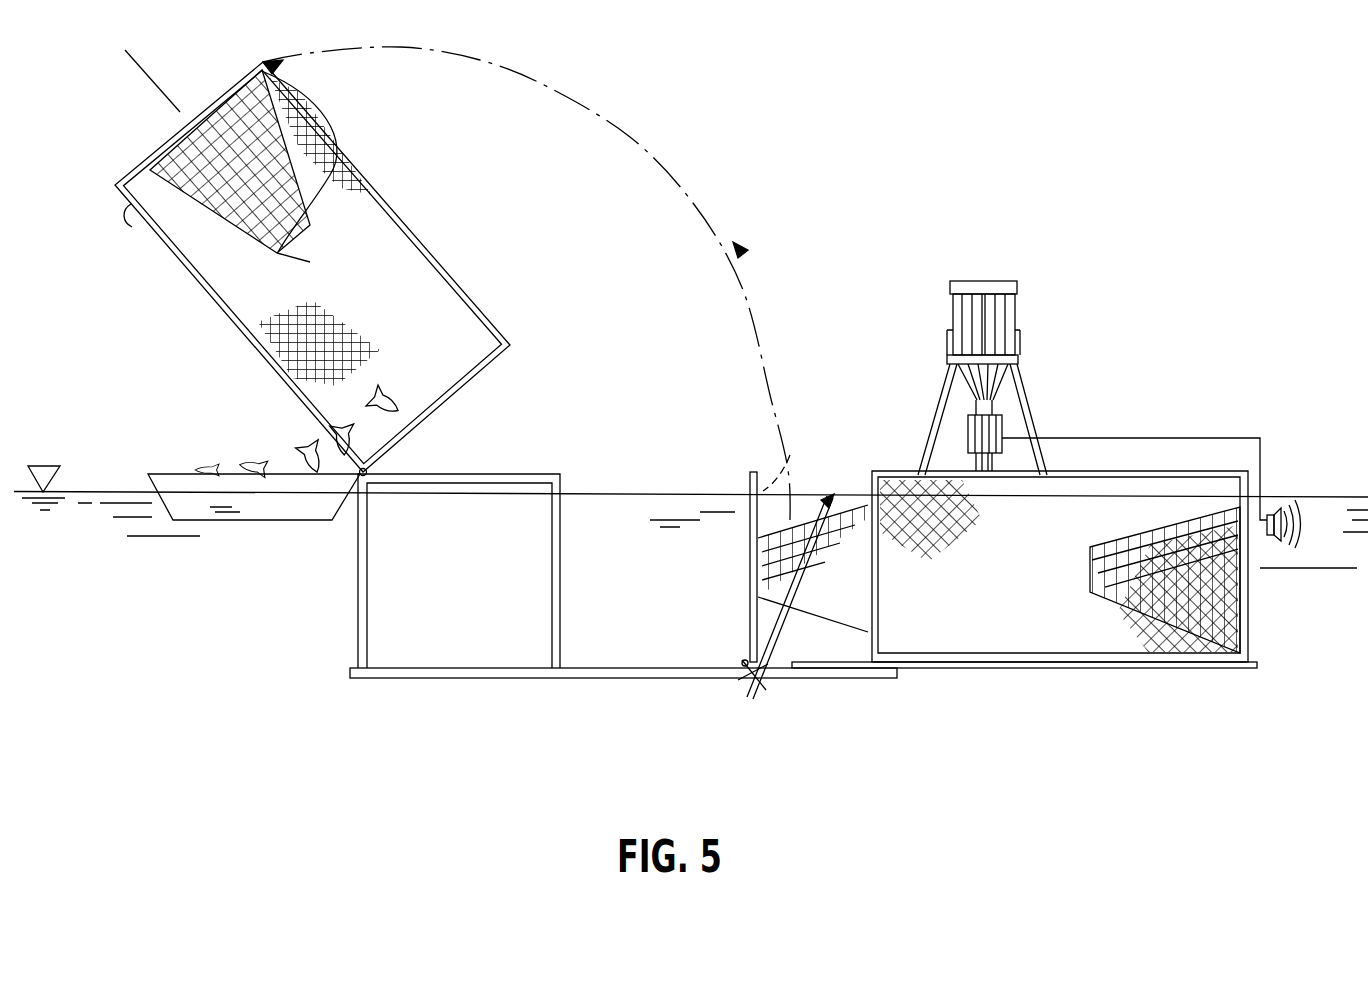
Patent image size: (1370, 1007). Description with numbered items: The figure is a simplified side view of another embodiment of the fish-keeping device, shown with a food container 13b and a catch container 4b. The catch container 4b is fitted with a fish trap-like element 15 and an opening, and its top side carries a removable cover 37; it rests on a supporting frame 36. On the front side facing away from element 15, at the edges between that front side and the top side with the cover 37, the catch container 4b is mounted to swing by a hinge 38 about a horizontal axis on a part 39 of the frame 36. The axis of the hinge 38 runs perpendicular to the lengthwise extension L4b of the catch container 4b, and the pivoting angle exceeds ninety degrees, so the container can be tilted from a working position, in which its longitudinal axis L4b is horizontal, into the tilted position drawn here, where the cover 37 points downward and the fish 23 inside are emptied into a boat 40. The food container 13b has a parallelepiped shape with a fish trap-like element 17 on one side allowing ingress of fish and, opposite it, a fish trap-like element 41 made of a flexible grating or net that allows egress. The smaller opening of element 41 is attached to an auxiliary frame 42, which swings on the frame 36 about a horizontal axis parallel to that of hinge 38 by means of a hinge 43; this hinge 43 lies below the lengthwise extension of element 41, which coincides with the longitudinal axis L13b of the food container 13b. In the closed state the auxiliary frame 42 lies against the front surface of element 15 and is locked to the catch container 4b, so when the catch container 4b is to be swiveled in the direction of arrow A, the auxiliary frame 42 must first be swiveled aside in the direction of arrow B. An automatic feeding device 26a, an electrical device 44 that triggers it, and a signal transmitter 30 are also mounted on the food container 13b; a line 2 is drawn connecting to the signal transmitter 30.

The catch container 4b is at (430, 220).
The fish trap-like element 15 is at (300, 160).
The removable cover 37 is at (245, 335).
The longitudinal axis L4b is at (150, 85).
The fish 23 is at (258, 468).
The hinge 38 is at (370, 472).
The boat 40 is at (293, 507).
The part of the frame 39 is at (561, 546).
The supporting frame 36 is at (625, 680).
The auxiliary frame 42 is at (750, 542).
The fish trap-like element 41 is at (828, 590).
The hinge 43 is at (752, 672).
The arrow B is at (790, 458).
The arrow A is at (650, 138).
The food container 13b is at (1140, 457).
The fish trap-like element 17 is at (1130, 590).
The automatic feeding device 26a is at (990, 318).
The electrical device 44 is at (992, 432).
The cable 2 is at (1304, 496).
The signal transmitter 30 is at (1302, 522).
The longitudinal axis L13b is at (1340, 569).